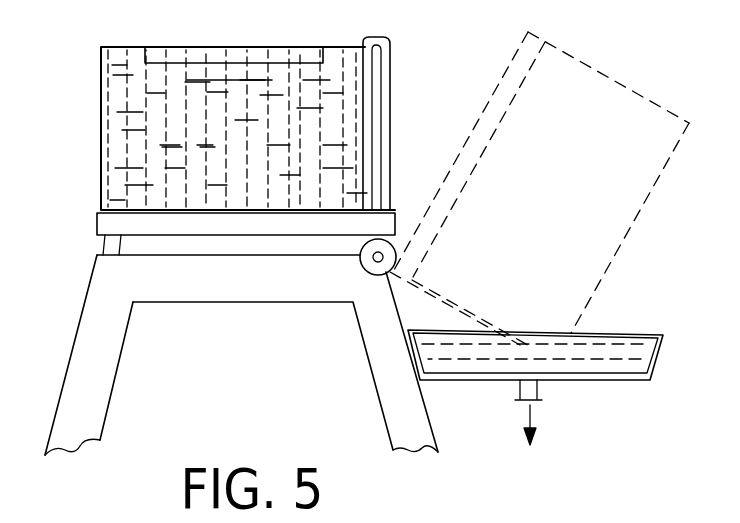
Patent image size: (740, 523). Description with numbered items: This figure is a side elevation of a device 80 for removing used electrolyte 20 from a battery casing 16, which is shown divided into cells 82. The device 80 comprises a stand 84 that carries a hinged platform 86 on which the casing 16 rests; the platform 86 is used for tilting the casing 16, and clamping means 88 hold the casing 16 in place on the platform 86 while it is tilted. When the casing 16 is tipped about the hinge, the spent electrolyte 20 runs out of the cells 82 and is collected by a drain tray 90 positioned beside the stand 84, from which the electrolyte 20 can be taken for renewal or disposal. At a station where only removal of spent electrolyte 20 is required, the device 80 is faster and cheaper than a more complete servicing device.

The battery casing 16 is at (101, 149).
The used electrolyte 20 is at (203, 62).
The device 80 is at (223, 336).
The cells 82 is at (270, 80).
The stand 84 is at (80, 375).
The hinged platform 86 is at (98, 230).
The clamping means 88 is at (378, 36).
The drain tray 90 is at (575, 382).